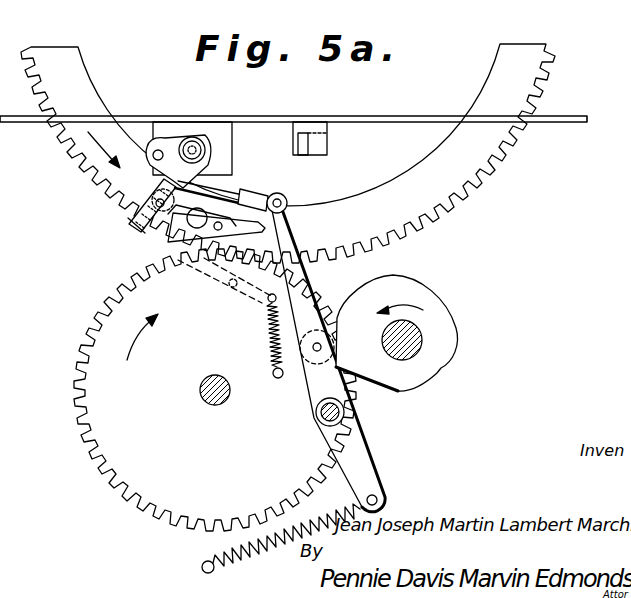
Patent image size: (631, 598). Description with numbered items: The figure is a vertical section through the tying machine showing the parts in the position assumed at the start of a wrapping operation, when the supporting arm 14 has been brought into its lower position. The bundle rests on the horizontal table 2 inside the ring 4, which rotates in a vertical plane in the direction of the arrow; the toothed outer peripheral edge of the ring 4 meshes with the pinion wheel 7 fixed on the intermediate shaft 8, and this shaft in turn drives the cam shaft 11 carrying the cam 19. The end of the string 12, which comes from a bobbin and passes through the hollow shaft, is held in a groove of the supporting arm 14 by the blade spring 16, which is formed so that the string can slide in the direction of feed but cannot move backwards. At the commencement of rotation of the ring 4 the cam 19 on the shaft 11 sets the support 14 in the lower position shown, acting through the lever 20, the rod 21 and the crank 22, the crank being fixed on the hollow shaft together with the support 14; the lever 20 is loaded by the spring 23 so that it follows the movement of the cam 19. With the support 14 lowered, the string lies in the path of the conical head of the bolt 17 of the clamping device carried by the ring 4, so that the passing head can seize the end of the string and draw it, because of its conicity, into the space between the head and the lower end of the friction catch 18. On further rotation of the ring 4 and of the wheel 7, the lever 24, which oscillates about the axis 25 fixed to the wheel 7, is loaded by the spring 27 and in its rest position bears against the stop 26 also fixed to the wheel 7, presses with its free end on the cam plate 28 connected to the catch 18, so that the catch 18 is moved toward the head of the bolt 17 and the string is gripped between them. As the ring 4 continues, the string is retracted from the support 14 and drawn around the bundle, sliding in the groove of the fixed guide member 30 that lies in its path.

The horizontal table 2 is at (390, 115).
The ring 4 is at (80, 86).
The pinion wheel 7 is at (92, 394).
The intermediate shaft 8 is at (200, 392).
The cam shaft 11 is at (415, 345).
The string 12 is at (202, 163).
The supporting arm 14 is at (130, 223).
The blade spring 16 is at (145, 236).
The conically headed bolt 17 is at (202, 214).
The friction catch 18 is at (240, 234).
The cam 19 is at (442, 313).
The lever 20 is at (312, 396).
The rod 21 is at (225, 188).
The crank 22 is at (173, 140).
The spring 23 is at (270, 530).
The lever 24 is at (190, 272).
The axis 25 is at (229, 289).
The stop 26 is at (262, 304).
The spring 27 is at (268, 358).
The cam plate 28 is at (178, 265).
The fixed guide member 30 is at (327, 127).